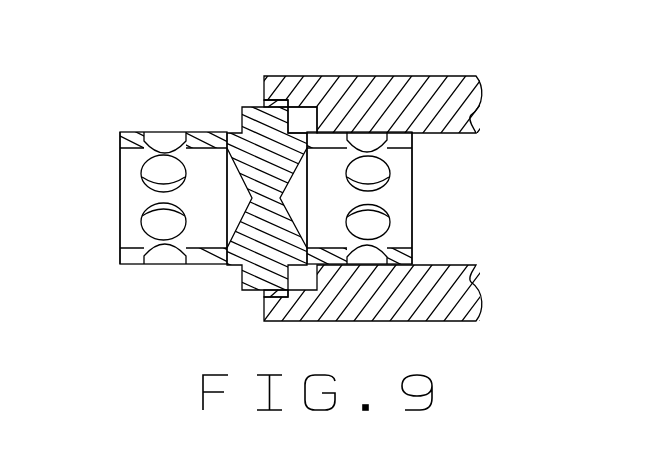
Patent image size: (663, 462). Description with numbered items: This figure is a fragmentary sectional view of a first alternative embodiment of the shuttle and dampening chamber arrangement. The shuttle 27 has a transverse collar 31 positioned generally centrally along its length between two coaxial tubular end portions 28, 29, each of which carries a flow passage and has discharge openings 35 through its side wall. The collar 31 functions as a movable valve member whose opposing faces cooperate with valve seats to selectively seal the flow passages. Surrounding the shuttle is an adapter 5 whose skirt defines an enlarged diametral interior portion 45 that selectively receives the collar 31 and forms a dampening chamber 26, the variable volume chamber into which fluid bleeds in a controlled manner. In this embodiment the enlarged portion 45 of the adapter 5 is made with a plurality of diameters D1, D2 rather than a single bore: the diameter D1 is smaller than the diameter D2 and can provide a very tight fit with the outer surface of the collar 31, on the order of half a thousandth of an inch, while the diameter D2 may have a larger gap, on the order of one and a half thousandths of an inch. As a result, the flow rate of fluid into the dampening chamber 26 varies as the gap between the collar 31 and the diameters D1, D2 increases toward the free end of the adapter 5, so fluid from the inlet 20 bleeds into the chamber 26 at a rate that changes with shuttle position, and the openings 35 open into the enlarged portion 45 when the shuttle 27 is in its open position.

The adapter 5 is at (403, 76).
The inlet 20 is at (440, 187).
The dampening chamber 26 is at (303, 275).
The shuttle 27 is at (132, 132).
The tubular end portion 28 is at (120, 205).
The tubular end portion 29 is at (412, 218).
The transverse collar 31 is at (248, 107).
The discharge opening 35 is at (367, 173).
The enlarged diametral interior portion 45 is at (267, 100).
The diameter D1 is at (300, 105).
The diameter D2 is at (273, 100).